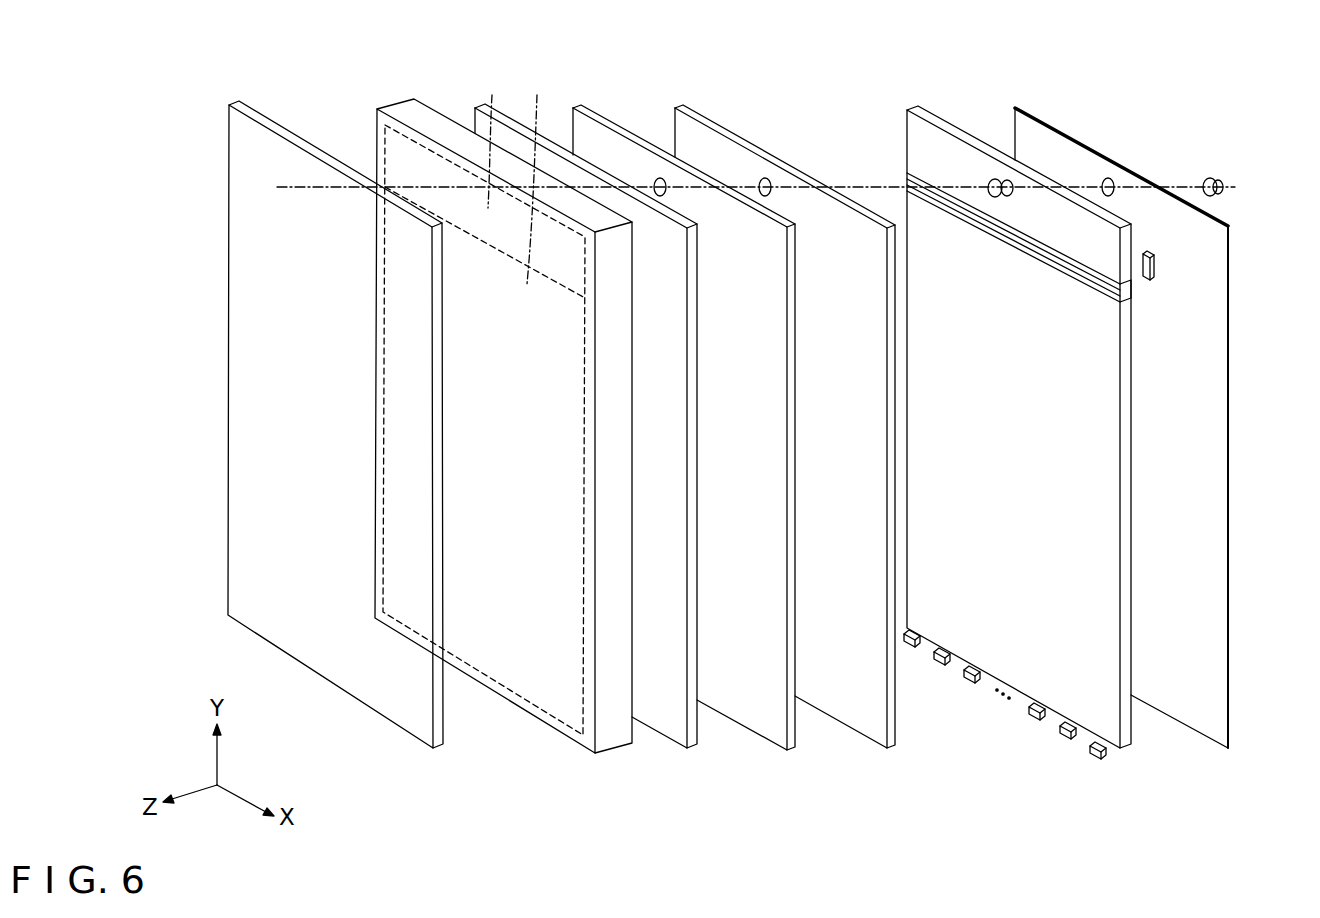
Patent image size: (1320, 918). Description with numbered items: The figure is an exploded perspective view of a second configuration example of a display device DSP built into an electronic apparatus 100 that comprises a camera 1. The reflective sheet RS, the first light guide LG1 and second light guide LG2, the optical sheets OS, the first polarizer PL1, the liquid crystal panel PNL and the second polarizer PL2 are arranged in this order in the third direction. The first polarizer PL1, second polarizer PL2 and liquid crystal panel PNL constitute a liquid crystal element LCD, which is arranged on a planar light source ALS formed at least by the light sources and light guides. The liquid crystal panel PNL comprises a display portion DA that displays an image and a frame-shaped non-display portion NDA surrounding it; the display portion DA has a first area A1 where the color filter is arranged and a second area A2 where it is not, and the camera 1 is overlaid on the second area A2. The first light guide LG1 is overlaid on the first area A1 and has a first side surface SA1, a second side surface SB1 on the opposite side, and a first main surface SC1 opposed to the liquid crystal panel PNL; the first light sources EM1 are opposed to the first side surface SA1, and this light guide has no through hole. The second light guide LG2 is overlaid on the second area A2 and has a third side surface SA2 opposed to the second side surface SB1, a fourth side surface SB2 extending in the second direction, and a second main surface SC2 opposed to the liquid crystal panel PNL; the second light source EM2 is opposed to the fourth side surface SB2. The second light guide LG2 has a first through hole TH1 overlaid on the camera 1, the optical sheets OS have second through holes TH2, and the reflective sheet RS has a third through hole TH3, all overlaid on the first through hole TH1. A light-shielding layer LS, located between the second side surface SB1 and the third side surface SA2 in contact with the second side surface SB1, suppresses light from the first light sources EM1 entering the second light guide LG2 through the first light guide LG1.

The electronic apparatus 100 is at (1268, 104).
The camera 1 is at (1212, 177).
The non-display portion NDA is at (415, 127).
The display portion DA is at (473, 72).
The first area A1 is at (540, 176).
The second area A2 is at (494, 138).
The first through hole TH1 is at (990, 178).
The second through holes TH2 is at (660, 177).
The third through hole TH3 is at (1108, 177).
The light-shielding layer LS is at (905, 177).
The second main surface SC2 is at (1011, 213).
The third side surface SA2 is at (1031, 256).
The second side surface SB1 is at (1077, 258).
The fourth side surface SB2 is at (1137, 238).
The second light guide LG2 is at (1118, 214).
The second light source EM2 is at (1153, 280).
The first main surface SC1 is at (1108, 532).
The second polarizer PL2 is at (433, 750).
The liquid crystal panel PNL is at (612, 740).
The first polarizer PL1 is at (693, 745).
The optical sheets OS is at (790, 737).
The planar light source ALS is at (995, 731).
The first light sources EM1 is at (1098, 762).
The first side surface SA1 is at (1127, 762).
The first light guide LG1 is at (1130, 707).
The reflective sheet RS is at (1228, 745).
The liquid crystal element LCD is at (733, 796).
The display device DSP is at (410, 843).